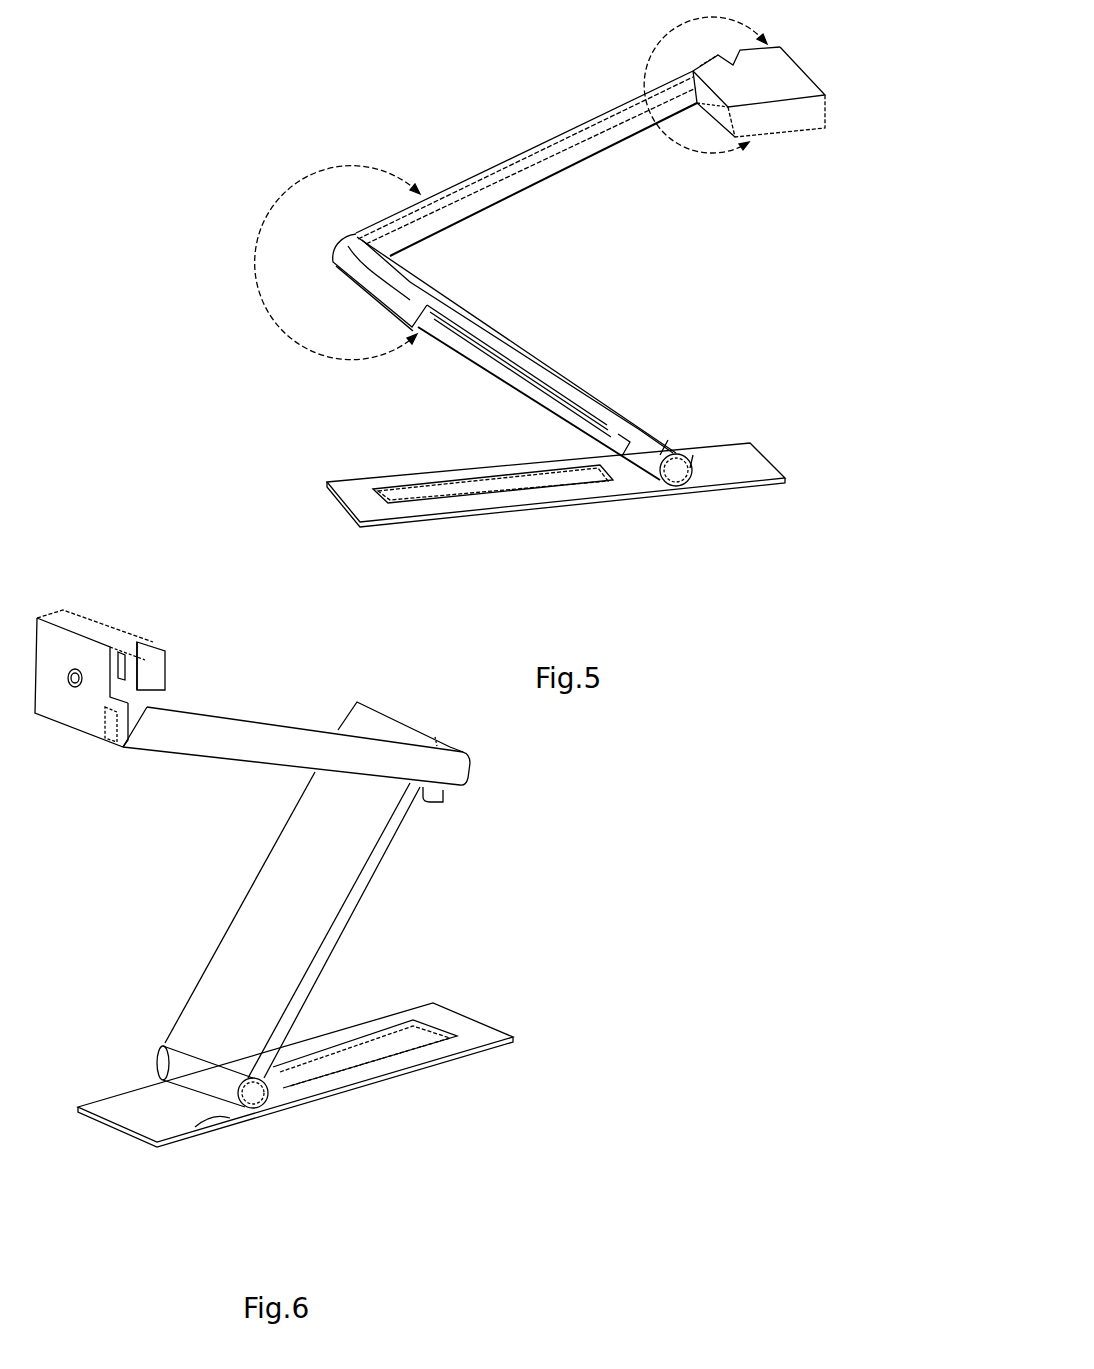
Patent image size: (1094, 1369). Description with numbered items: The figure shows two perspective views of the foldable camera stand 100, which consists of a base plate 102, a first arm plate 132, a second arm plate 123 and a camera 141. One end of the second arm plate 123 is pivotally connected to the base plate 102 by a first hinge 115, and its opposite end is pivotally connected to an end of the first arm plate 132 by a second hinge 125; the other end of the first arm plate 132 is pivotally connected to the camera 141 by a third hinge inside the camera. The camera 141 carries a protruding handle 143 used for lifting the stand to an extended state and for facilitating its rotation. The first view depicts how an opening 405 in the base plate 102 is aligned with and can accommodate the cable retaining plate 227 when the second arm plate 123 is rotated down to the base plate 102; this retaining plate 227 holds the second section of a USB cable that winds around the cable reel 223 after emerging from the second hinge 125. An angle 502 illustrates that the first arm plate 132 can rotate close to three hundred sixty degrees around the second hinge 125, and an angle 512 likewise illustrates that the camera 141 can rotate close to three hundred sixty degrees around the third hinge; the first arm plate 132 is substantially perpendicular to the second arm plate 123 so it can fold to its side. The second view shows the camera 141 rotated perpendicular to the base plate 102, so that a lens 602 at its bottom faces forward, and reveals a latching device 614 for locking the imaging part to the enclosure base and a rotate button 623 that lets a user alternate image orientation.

In FIG. 5, the foldable camera stand 100 is at (427, 92).
In FIG. 6, the foldable camera stand 100 is at (497, 826).
In FIG. 5, the base plate 102 is at (728, 467).
In FIG. 6, the base plate 102 is at (468, 1027).
In FIG. 5, the first hinge 115 is at (678, 473).
In FIG. 6, the first hinge 115 is at (248, 1097).
In FIG. 5, the second arm plate 123 is at (540, 358).
In FIG. 6, the second arm plate 123 is at (320, 905).
In FIG. 5, the second hinge 125 is at (392, 288).
In FIG. 5, the first arm plate 132 is at (600, 143).
In FIG. 6, the first arm plate 132 is at (250, 738).
In FIG. 5, the camera 141 is at (797, 117).
In FIG. 6, the camera 141 is at (57, 645).
In FIG. 5, the protruding handle 143 is at (773, 53).
In FIG. 6, the protruding handle 143 is at (152, 657).
In FIG. 5, the cable reel 223 is at (530, 375).
In FIG. 5, the cable retaining plate 227 is at (445, 340).
In FIG. 5, the opening 405 is at (497, 488).
In FIG. 6, the opening 405 is at (362, 1050).
In FIG. 5, the angle 502 is at (338, 251).
In FIG. 5, the angle 512 is at (715, 76).
In FIG. 6, the lens 602 is at (75, 687).
In FIG. 6, the latching device 614 is at (110, 738).
In FIG. 6, the rotate button 623 is at (122, 658).